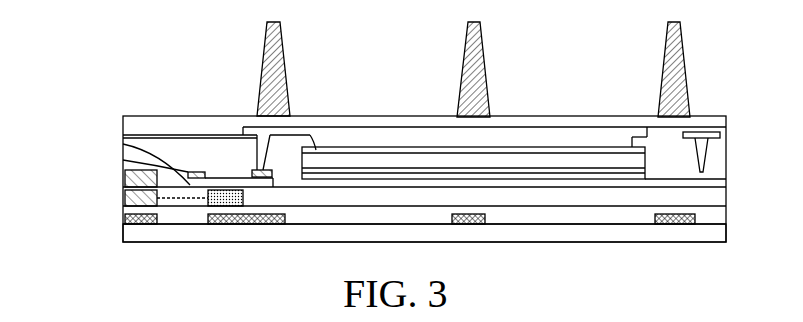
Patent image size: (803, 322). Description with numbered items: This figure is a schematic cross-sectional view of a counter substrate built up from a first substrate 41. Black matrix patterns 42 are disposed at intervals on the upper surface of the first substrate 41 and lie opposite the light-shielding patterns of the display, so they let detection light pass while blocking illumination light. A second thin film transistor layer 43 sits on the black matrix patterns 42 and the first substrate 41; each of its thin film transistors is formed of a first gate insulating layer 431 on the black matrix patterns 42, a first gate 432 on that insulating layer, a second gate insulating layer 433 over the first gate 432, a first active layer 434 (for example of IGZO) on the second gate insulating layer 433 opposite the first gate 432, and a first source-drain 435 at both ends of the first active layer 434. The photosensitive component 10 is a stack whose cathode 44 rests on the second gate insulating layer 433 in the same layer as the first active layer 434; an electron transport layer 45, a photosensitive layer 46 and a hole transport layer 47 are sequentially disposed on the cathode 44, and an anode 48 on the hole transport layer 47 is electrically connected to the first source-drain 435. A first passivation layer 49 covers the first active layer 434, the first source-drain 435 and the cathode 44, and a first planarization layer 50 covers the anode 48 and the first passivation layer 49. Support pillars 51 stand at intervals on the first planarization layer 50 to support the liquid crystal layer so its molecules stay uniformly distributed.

The photosensitive component 10 is at (479, 101).
The first substrate 41 is at (690, 235).
The black matrix patterns 42 is at (693, 217).
The second thin film transistor layer 43 is at (132, 182).
The first gate insulating layer 431 is at (109, 217).
The first gate 432 is at (127, 200).
The second gate insulating layer 433 is at (125, 188).
The first active layer 434 is at (123, 160).
The first source-drain 435 is at (123, 144).
The cathode 44 is at (707, 178).
The electron transport layer 45 is at (473, 136).
The photosensitive layer 46 is at (530, 165).
The hole transport layer 47 is at (520, 153).
The anode 48 is at (505, 142).
The first passivation layer 49 is at (717, 152).
The first planarization layer 50 is at (715, 122).
The support pillars 51 is at (687, 84).